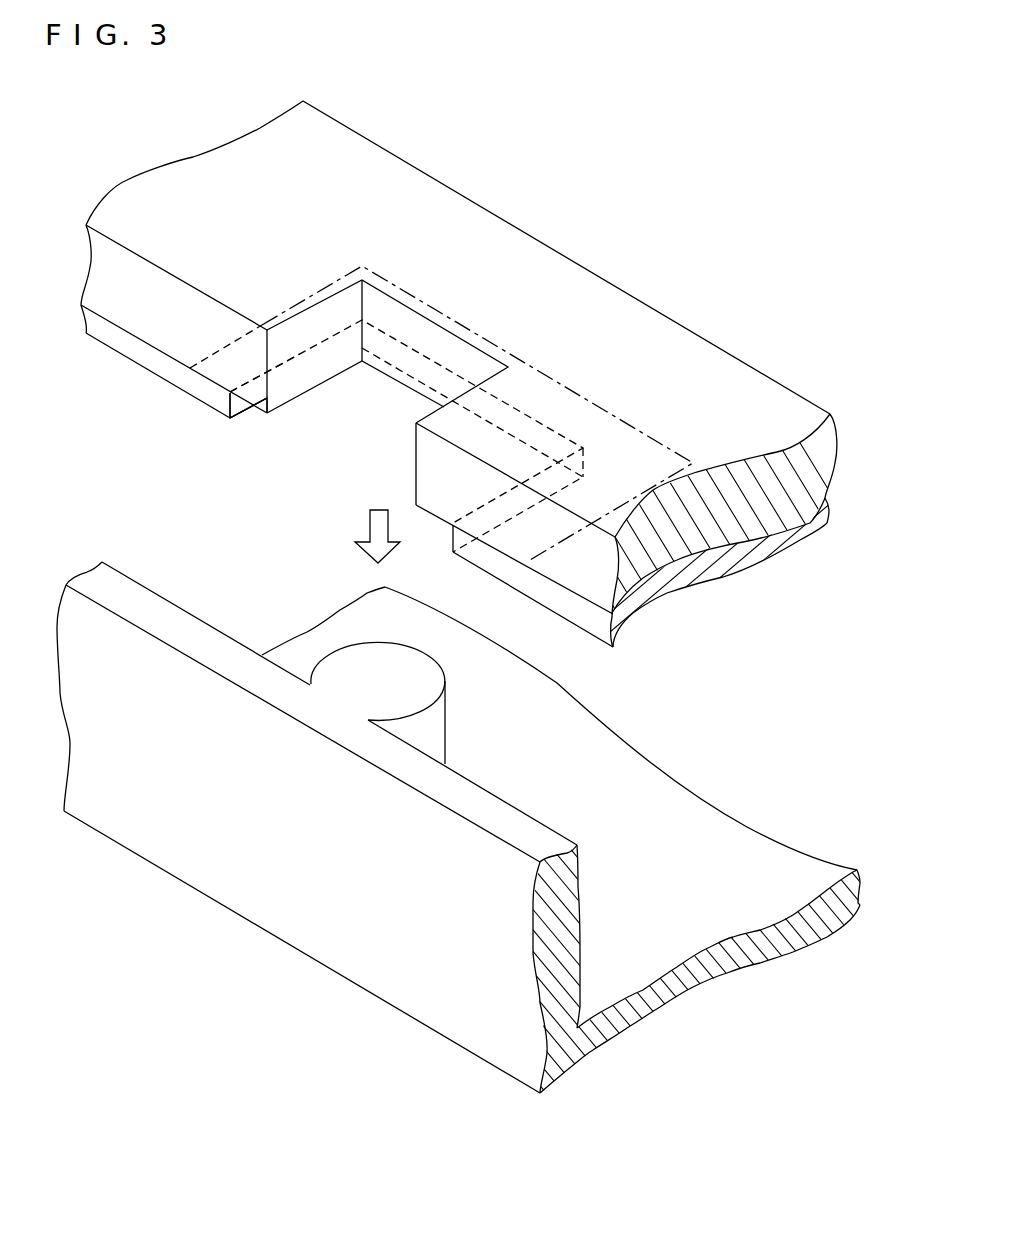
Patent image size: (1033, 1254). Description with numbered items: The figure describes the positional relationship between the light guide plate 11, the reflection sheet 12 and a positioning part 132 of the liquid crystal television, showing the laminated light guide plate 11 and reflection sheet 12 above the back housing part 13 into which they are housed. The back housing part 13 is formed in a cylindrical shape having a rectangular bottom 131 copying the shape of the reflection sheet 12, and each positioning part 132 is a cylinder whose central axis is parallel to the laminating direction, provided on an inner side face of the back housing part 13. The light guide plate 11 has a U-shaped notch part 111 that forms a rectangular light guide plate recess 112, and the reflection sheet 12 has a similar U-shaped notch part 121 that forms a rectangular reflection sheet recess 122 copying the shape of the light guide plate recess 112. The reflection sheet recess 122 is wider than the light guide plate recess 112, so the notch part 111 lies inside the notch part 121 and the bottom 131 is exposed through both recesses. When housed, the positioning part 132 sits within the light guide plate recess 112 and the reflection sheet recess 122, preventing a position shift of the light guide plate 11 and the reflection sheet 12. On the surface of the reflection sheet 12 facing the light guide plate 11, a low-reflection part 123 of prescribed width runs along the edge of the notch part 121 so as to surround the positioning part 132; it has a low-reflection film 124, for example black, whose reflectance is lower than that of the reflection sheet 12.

The light guide plate 11 is at (640, 337).
The notch part 111 is at (442, 322).
The light guide plate recess 112 is at (305, 425).
The reflection sheet 12 is at (567, 613).
The notch part 121 is at (243, 417).
The reflection sheet recess 122 is at (258, 418).
The low-reflection part 123 is at (212, 348).
The low-reflection film 124 is at (230, 372).
The back housing part 13 is at (375, 967).
The bottom 131 is at (678, 817).
The positioning part 132 is at (348, 660).